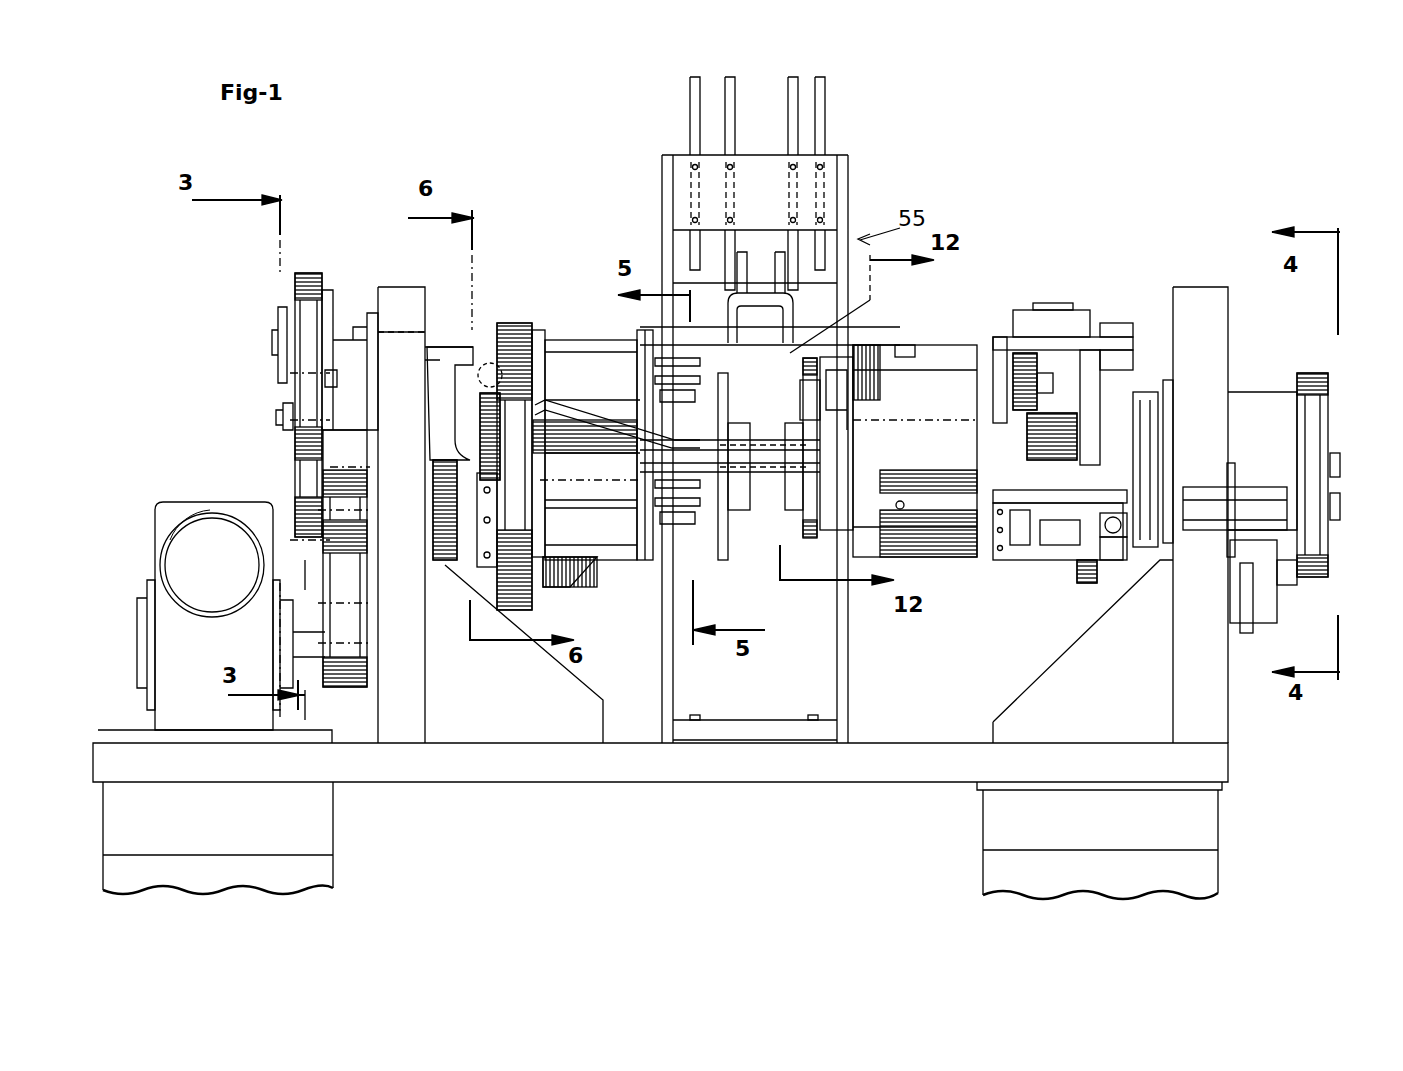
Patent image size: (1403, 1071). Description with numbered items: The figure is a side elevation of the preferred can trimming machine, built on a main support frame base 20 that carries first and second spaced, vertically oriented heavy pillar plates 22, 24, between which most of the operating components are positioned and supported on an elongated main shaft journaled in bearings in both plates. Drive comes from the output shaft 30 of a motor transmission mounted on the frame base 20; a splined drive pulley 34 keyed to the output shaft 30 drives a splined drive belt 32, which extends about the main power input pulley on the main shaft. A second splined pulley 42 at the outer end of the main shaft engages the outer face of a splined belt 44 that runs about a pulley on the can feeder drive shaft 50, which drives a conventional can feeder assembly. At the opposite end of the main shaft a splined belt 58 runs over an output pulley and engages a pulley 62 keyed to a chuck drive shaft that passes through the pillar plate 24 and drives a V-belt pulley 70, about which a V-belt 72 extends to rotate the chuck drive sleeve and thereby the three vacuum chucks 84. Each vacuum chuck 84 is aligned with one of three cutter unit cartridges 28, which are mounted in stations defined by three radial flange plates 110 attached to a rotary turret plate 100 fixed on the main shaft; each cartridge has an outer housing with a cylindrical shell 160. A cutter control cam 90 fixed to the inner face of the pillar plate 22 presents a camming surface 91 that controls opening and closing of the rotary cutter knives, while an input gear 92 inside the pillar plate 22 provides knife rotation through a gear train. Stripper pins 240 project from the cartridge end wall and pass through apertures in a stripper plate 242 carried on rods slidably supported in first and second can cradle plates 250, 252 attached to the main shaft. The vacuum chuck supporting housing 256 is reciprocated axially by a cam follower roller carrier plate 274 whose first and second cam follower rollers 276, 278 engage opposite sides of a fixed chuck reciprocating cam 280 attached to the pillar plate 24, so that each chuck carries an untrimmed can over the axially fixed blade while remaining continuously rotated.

The main support frame base 20 is at (710, 770).
The first pillar plate 22 is at (160, 607).
The second pillar plate 24 is at (1205, 286).
The cutter unit cartridge 28 is at (616, 463).
The output shaft 30 is at (305, 655).
The splined drive belt 32 is at (355, 575).
The splined drive pulley 34 is at (368, 665).
The second splined pulley 42 is at (295, 483).
The splined belt 44 is at (303, 275).
The can feeder drive shaft 50 is at (345, 330).
The splined belt 58 is at (1318, 420).
The pulley 62 is at (1335, 520).
The V-belt pulley 70 is at (1160, 555).
The V-belt 72 is at (1160, 480).
The vacuum chuck 84 is at (790, 520).
The cutter control cam 90 is at (450, 345).
The camming surface 91 is at (492, 450).
The input gear 92 is at (450, 565).
The rotary turret plate 100 is at (510, 327).
The radial flange plate 110 is at (572, 412).
The cylindrical shell 160 is at (547, 330).
The stripper pin 240 is at (690, 378).
The stripper plate 242 is at (645, 345).
The first can cradle plate 250 is at (723, 560).
The second can cradle plate 252 is at (850, 545).
The vacuum chuck supporting housing 256 is at (895, 345).
The cam follower roller carrier plate 274 is at (1090, 335).
The first cam follower roller 276 is at (1000, 350).
The second cam follower roller 278 is at (1135, 350).
The chuck reciprocating cam 280 is at (1085, 586).